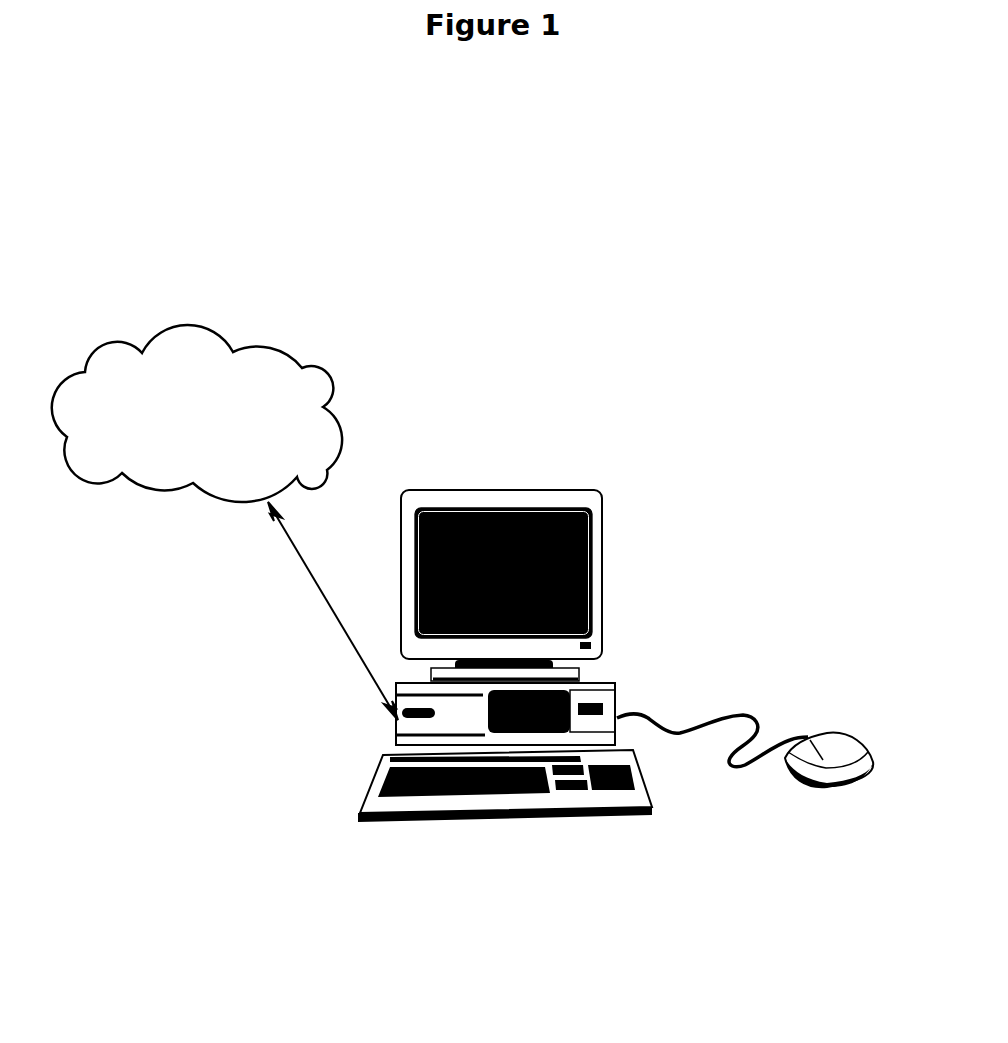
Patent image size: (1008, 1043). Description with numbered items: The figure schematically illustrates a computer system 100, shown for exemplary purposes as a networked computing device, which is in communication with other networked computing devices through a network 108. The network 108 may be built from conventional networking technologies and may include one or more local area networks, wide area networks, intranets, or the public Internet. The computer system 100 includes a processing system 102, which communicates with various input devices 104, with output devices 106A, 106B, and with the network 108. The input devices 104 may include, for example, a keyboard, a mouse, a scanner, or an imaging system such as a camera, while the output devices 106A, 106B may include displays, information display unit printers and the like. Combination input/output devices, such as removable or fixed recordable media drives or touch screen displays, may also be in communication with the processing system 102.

The computer system 100 is at (640, 380).
The processing system 102 is at (612, 690).
The input devices 104 is at (607, 533).
The output device 106A is at (552, 817).
The output device 106B is at (807, 770).
The network 108 is at (197, 413).